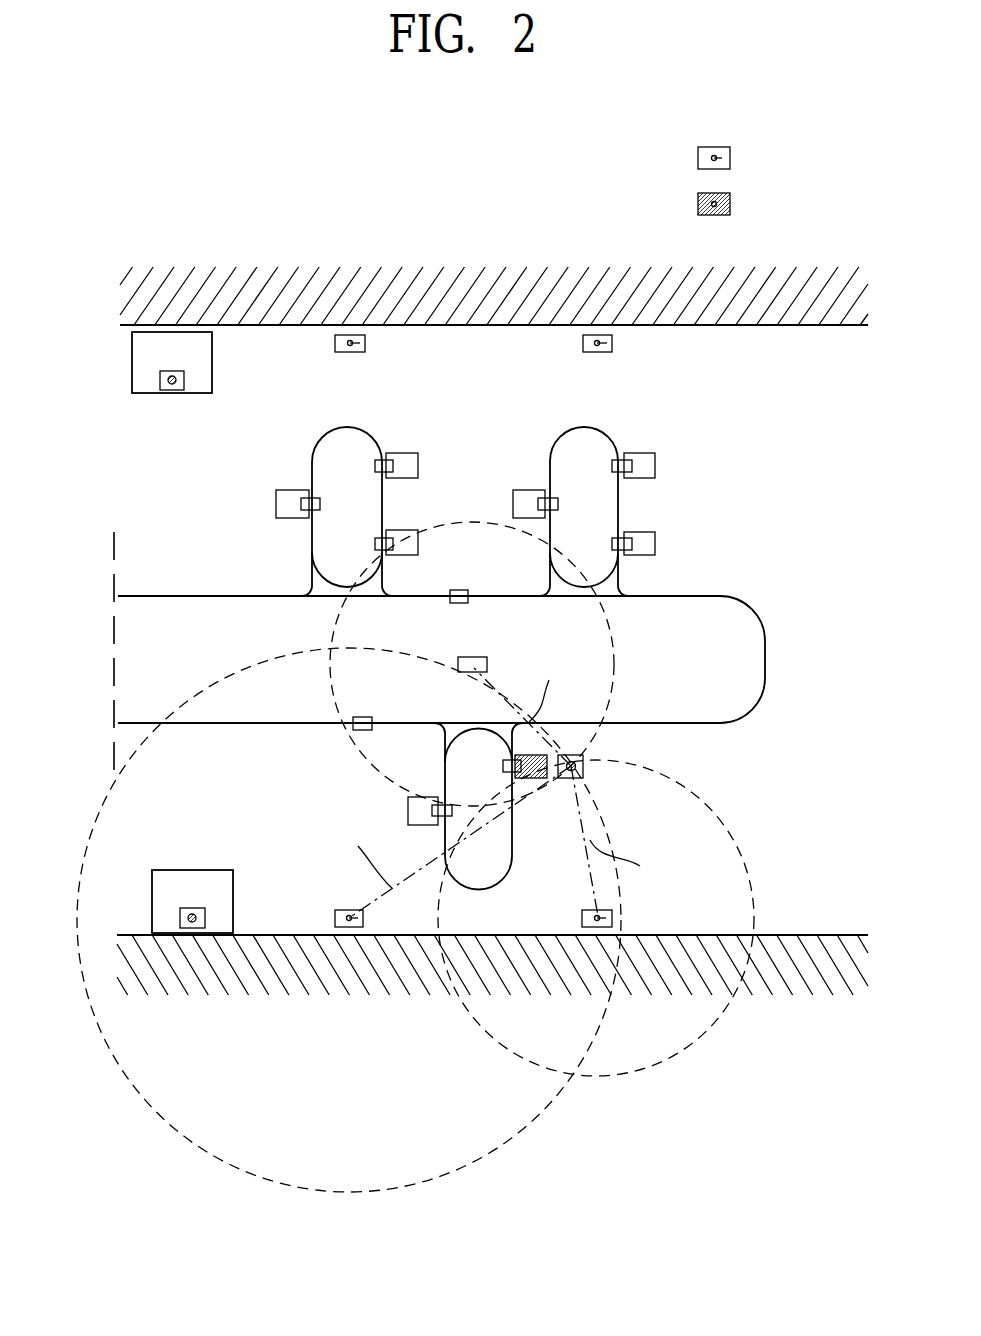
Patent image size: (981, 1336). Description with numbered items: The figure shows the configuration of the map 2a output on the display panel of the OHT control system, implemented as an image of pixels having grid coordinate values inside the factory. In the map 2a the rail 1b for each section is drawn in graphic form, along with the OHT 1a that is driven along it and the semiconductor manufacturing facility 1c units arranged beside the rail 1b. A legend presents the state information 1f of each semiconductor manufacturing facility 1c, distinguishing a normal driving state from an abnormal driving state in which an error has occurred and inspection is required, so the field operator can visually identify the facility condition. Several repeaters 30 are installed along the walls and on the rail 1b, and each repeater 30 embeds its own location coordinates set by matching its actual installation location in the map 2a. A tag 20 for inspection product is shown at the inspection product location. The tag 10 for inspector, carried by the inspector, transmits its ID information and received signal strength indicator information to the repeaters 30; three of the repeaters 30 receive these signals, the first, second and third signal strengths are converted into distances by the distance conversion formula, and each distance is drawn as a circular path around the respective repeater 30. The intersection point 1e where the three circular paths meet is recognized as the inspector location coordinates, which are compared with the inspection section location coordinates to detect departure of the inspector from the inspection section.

The map 2a is at (160, 216).
The repeater 30 is at (350, 335).
The tag for inspection product 20 is at (172, 393).
The state information 1f is at (698, 205).
The rail for each section 1b is at (588, 428).
The OHT 1a is at (624, 460).
The semiconductor manufacturing facility 1c is at (418, 465).
The tag for inspector 10 is at (576, 755).
The intersection point 1e is at (584, 776).